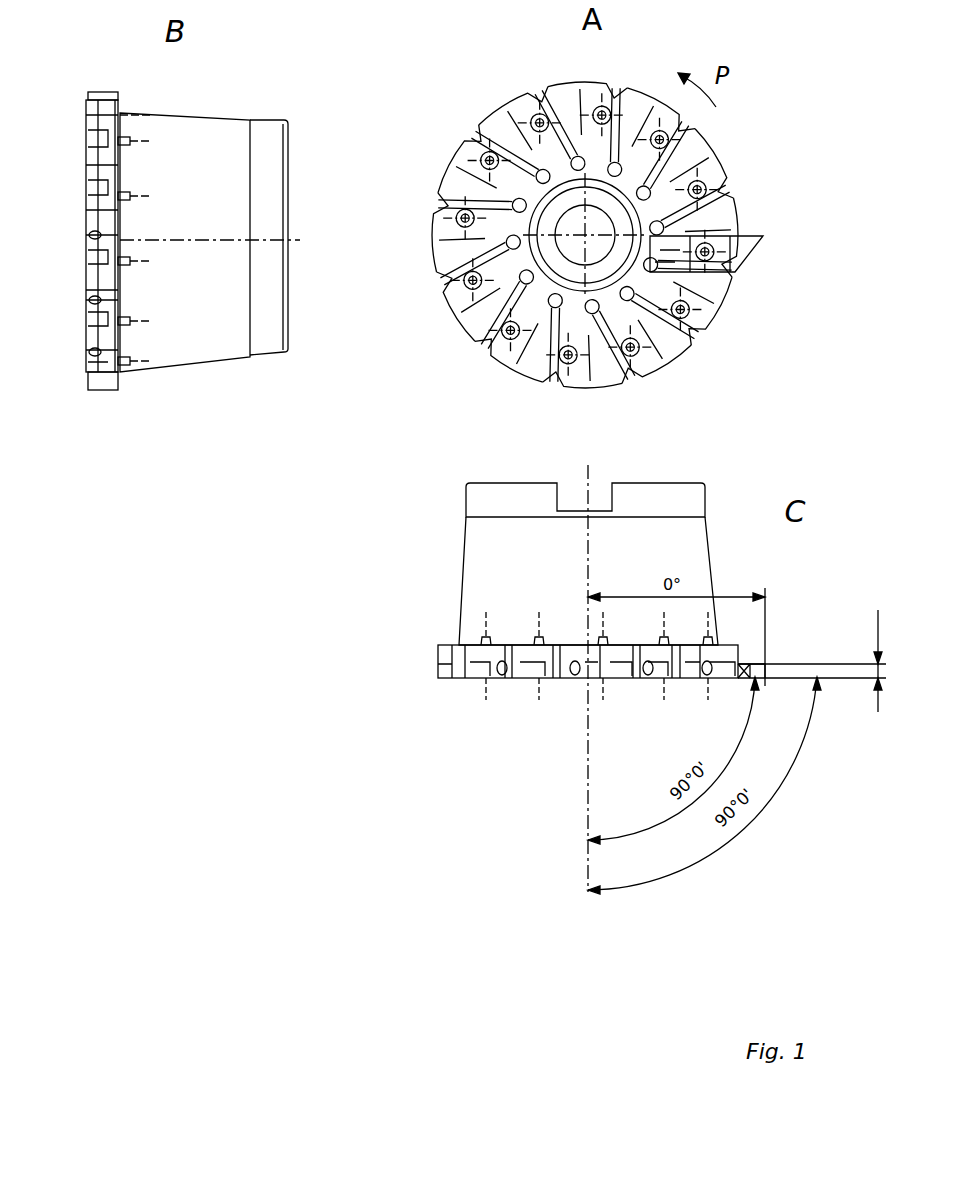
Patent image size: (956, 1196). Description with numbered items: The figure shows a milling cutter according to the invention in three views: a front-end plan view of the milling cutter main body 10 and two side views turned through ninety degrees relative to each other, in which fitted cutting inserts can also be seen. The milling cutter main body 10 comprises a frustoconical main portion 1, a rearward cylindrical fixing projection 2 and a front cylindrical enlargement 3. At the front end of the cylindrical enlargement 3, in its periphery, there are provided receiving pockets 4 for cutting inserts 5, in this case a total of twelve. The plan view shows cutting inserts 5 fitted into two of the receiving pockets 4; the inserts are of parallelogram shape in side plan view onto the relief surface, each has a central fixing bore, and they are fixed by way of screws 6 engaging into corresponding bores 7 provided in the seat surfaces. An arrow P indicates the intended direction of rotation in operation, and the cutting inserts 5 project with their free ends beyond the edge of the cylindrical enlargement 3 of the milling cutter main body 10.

The frustoconical main portion 1 is at (205, 138).
The rearward cylindrical fixing projection 2 is at (270, 135).
The front cylindrical enlargement 3 is at (108, 92).
The receiving pockets 4 is at (88, 177).
The cutting inserts 5 is at (88, 270).
The screws 6 is at (738, 225).
The bores 7 is at (440, 300).
The milling cutter main body 10 is at (192, 396).